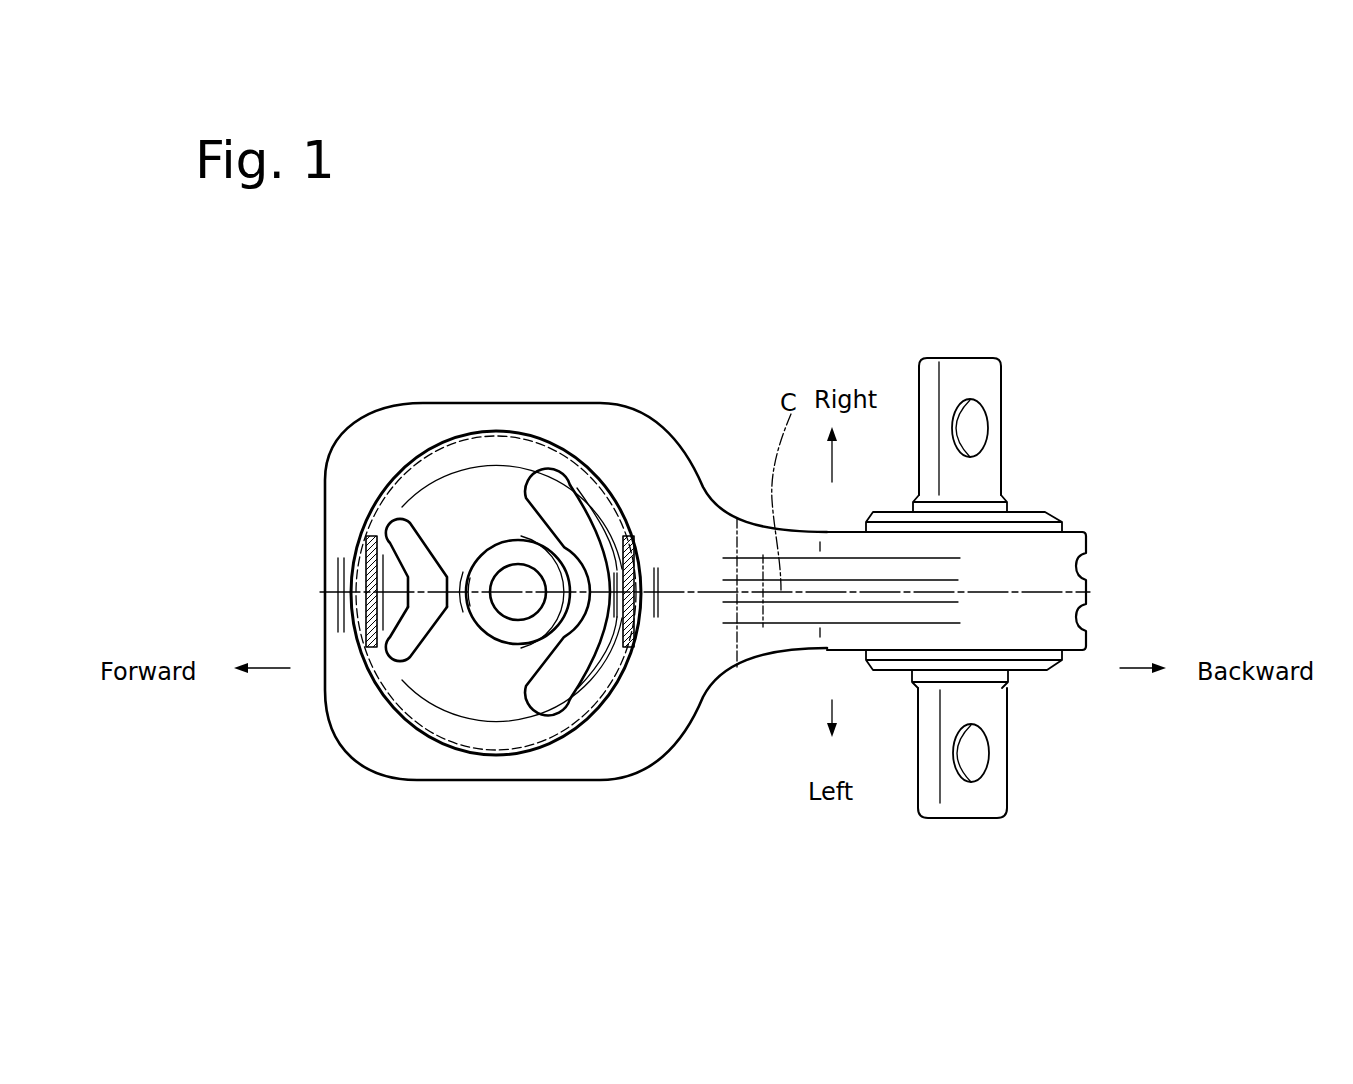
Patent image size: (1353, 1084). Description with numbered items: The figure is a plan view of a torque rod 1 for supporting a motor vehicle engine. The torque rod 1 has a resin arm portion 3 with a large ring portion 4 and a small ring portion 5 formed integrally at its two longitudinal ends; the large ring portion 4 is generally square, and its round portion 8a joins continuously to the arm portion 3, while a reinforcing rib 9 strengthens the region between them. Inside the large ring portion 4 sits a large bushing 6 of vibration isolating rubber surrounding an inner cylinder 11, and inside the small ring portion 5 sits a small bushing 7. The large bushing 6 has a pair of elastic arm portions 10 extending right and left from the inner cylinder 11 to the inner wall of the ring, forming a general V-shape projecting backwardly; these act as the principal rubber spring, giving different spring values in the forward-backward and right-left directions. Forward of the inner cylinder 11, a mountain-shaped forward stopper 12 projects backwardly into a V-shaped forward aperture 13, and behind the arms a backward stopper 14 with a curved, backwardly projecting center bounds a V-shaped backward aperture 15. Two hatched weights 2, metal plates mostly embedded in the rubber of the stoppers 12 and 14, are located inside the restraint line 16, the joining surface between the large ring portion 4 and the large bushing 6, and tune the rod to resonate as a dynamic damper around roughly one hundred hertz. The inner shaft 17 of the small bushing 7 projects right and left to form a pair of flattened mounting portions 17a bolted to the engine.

The torque rod 1 is at (434, 378).
The weight 2 is at (370, 642).
The arm portion 3 is at (852, 545).
The large ring portion 4 is at (352, 454).
The small ring portion 5 is at (1080, 540).
The large bushing 6 is at (456, 498).
The small bushing 7 is at (1045, 498).
The round portion 8a is at (740, 508).
The reinforcing rib 9 is at (855, 573).
The elastic arm portion 10 is at (458, 705).
The inner cylinder 11 is at (513, 550).
The forward stopper 12 is at (393, 577).
The forward aperture 13 is at (403, 647).
The backward stopper 14 is at (600, 518).
The backward aperture 15 is at (549, 493).
The restraint line 16 is at (508, 748).
The inner shaft 17 is at (992, 497).
The flattened mounting portion 17a is at (923, 387).